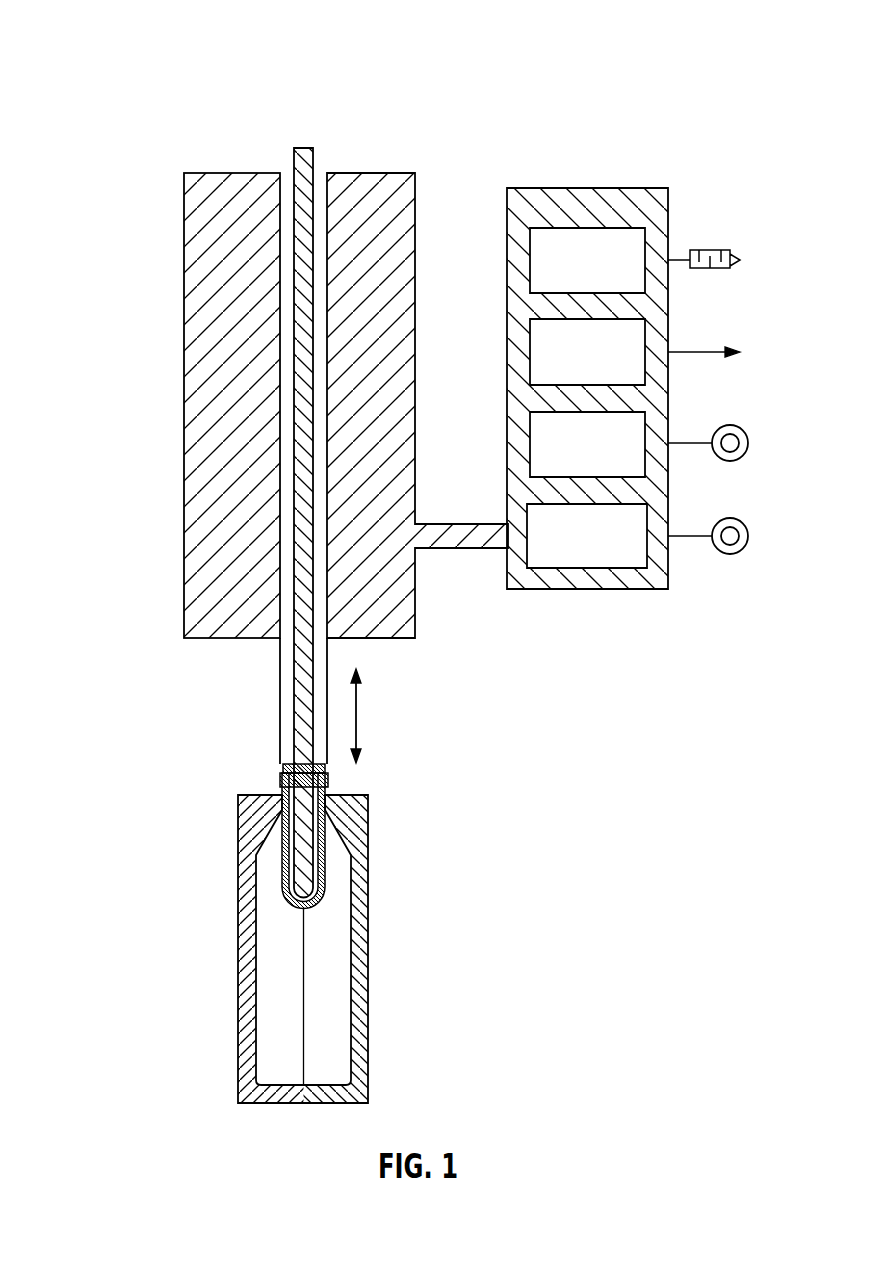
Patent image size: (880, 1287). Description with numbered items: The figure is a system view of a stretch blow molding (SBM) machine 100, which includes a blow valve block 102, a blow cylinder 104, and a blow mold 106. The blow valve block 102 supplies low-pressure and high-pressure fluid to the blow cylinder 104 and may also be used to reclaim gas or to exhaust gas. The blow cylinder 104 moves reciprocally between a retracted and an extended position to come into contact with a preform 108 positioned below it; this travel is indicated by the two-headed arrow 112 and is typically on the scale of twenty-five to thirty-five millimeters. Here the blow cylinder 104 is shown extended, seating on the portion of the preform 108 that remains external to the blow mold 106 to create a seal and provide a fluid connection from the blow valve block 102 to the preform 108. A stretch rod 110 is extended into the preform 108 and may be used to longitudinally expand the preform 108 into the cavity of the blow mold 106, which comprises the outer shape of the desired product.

The SBM machine 100 is at (161, 63).
The blow valve block 102 is at (588, 188).
The blow cylinder 104 is at (184, 278).
The blow mold 106 is at (238, 948).
The preform 108 is at (280, 850).
The stretch rod 110 is at (293, 698).
The two-headed arrow 112 is at (357, 717).